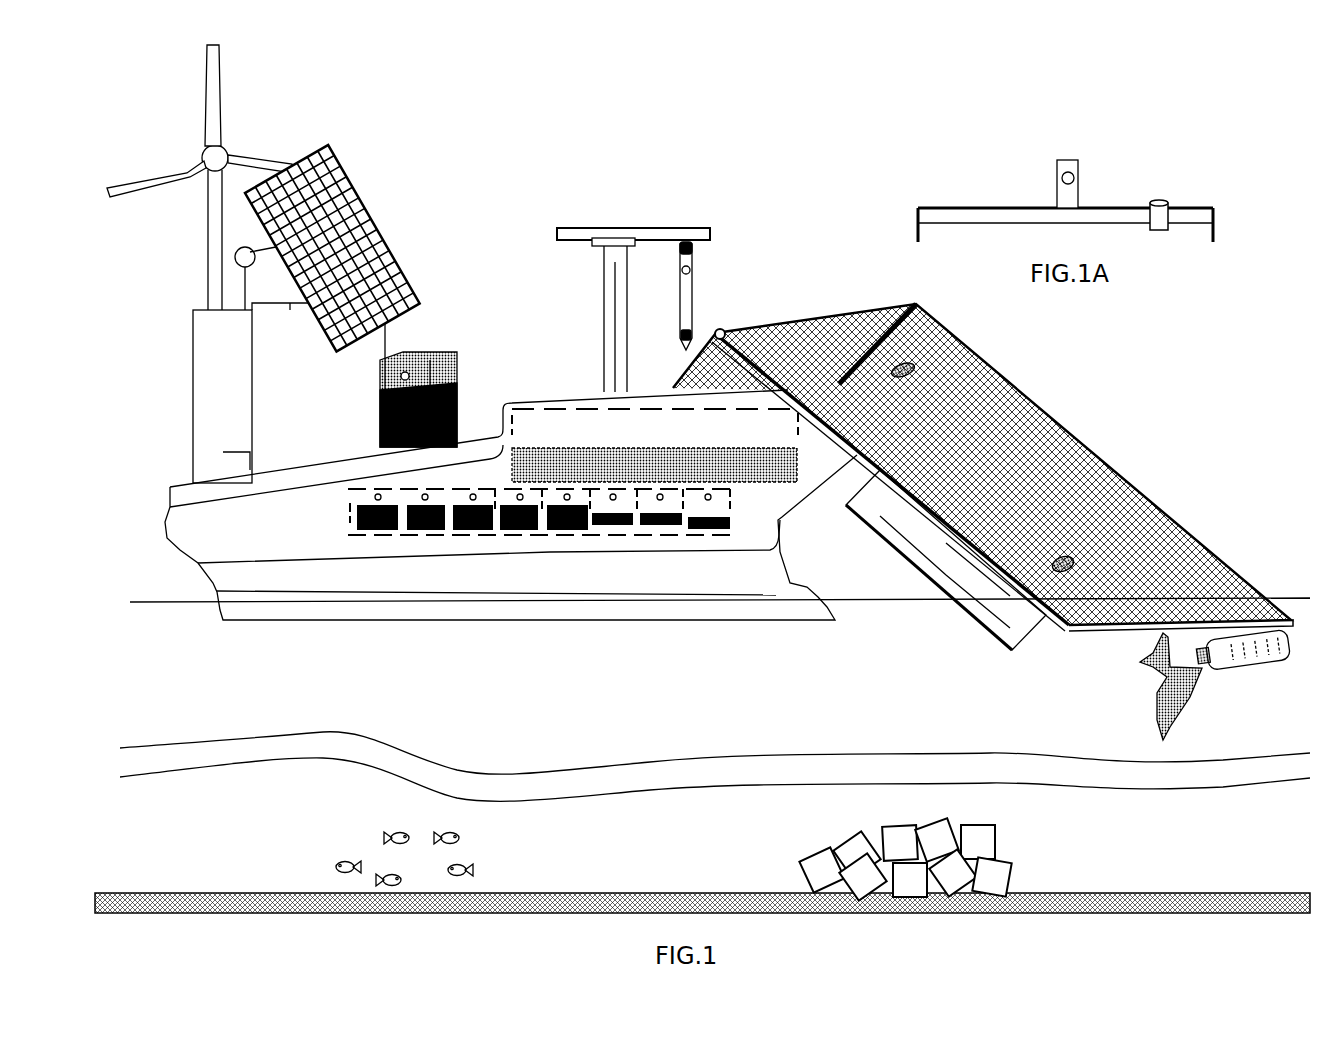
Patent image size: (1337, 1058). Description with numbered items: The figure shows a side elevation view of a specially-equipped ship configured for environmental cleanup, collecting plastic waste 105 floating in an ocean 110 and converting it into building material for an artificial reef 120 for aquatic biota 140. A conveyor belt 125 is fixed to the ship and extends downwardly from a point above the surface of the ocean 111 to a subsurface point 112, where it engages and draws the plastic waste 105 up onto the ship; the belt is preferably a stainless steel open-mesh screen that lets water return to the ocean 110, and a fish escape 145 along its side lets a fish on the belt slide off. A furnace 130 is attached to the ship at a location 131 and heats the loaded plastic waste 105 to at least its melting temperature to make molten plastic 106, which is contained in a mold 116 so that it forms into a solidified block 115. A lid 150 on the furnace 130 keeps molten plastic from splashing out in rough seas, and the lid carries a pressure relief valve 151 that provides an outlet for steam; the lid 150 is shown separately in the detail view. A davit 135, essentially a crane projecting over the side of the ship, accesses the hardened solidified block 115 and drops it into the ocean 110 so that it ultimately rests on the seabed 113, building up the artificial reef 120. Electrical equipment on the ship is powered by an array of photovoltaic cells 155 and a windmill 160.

In FIG. 1, the plastic waste 105 is at (1167, 695).
In FIG. 1, the molten plastic 106 is at (605, 458).
In FIG. 1, the ocean 110 is at (215, 700).
In FIG. 1, the surface of the ocean 111 is at (1309, 597).
In FIG. 1, the subsurface point 112 is at (1095, 625).
In FIG. 1, the seabed 113 is at (1275, 892).
In FIG. 1, the solidified block 115 is at (457, 398).
In FIG. 1, the mold 116 is at (460, 345).
In FIG. 1, the artificial reef 120 is at (983, 802).
In FIG. 1, the conveyor belt 125 is at (965, 408).
In FIG. 1, the furnace 130 is at (657, 430).
In FIG. 1, the location 131 is at (800, 482).
In FIG. 1, the davit 135 is at (683, 232).
In FIG. 1, the aquatic biota 140 is at (457, 810).
In FIG. 1, the fish escape 145 is at (932, 567).
In FIG. 1A, the lid 150 is at (1027, 218).
In FIG. 1A, the pressure relief valve 151 is at (1158, 217).
In FIG. 1, the array of photovoltaic cells 155 is at (341, 158).
In FIG. 1, the windmill 160 is at (217, 158).